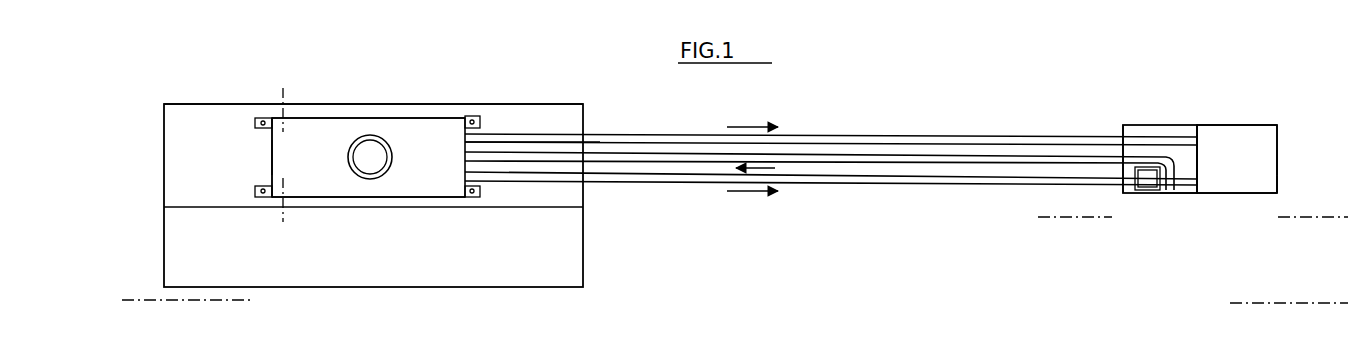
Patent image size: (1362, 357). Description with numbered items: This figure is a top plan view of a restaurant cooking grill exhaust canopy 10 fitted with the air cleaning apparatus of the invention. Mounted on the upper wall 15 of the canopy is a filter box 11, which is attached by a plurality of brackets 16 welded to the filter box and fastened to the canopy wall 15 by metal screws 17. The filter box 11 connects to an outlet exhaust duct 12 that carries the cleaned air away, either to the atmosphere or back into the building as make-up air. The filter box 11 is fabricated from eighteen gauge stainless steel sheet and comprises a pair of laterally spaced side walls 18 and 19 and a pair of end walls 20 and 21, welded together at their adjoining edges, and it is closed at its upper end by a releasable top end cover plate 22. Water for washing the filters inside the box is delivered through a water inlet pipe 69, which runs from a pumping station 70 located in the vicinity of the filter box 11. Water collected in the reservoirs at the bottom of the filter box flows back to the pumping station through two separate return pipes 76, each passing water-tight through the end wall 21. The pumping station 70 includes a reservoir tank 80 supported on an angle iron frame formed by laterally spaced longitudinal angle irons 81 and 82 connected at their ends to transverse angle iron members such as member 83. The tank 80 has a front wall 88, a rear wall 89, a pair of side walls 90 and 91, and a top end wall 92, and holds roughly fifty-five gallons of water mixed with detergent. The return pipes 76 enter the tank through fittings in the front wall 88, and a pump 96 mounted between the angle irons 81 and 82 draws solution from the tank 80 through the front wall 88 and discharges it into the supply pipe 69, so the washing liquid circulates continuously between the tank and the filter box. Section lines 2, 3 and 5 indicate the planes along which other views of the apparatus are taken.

The section line 2- 2 is at (152, 305).
The section line 3- 3 is at (278, 110).
The section line 5- 5 is at (1060, 222).
The restaurant cooking grill exhaust canopy 10 is at (590, 262).
The filter box 11 is at (268, 157).
The outlet exhaust duct 12 is at (381, 176).
The upper wall 15 is at (563, 110).
The brackets 16 is at (258, 122).
The metal screws 17 is at (259, 125).
The side wall 18 is at (350, 198).
The side wall 19 is at (428, 118).
The end wall 20 is at (272, 167).
The end wall 21 is at (468, 147).
The top end cover plate 22 is at (327, 127).
The water inlet pipe 69 is at (830, 155).
The pumping station 70 is at (1228, 120).
The return pipe 76 is at (956, 138).
The reservoir tank 80 is at (1243, 140).
The longitudinal angle iron 81 is at (1165, 125).
The longitudinal angle iron 82 is at (1170, 196).
The transverse angle iron member 83 is at (1122, 132).
The front wall 88 is at (1194, 151).
The rear wall 89 is at (1278, 163).
The side wall 90 is at (1245, 195).
The side wall 91 is at (1272, 128).
The top end wall 92 is at (1278, 180).
The pump 96 is at (1148, 200).